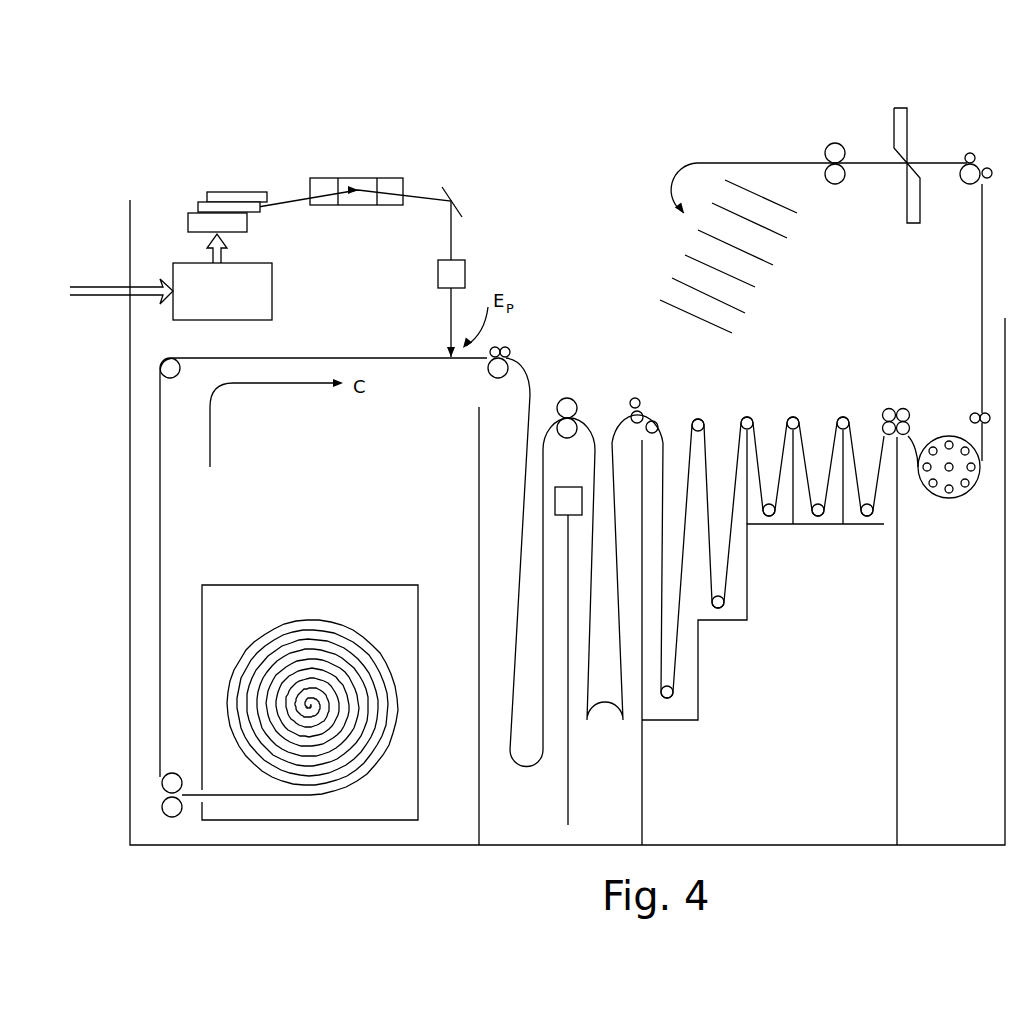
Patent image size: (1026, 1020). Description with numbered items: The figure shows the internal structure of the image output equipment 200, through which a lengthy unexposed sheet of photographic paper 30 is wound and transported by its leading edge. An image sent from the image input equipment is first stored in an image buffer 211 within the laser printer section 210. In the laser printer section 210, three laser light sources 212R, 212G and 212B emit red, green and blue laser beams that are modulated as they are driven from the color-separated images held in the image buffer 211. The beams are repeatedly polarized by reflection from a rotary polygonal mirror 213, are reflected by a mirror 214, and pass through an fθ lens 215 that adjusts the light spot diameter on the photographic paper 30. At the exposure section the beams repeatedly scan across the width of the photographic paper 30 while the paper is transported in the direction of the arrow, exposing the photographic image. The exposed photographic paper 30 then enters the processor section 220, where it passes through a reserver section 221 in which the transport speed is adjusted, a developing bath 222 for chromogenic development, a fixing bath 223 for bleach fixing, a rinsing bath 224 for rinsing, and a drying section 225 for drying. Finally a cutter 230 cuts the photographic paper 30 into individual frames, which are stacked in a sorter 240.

The photographic paper 30 is at (360, 596).
The image output equipment 200 is at (874, 83).
The laser printer section 210 is at (300, 201).
The image buffer 211 is at (272, 288).
The laser light source 212R is at (188, 222).
The laser light source 212G is at (198, 205).
The laser light source 212B is at (233, 192).
The rotary polygonal mirror 213 is at (388, 185).
The mirror 214 is at (433, 190).
The fθ lens 215 is at (457, 272).
The processor section 220 is at (729, 474).
The reserver section 221 is at (570, 380).
The developing bath 222 is at (665, 405).
The fixing bath 223 is at (708, 407).
The rinsing bath 224 is at (836, 405).
The drying section 225 is at (943, 410).
The cutter 230 is at (912, 197).
The sorter 240 is at (790, 287).